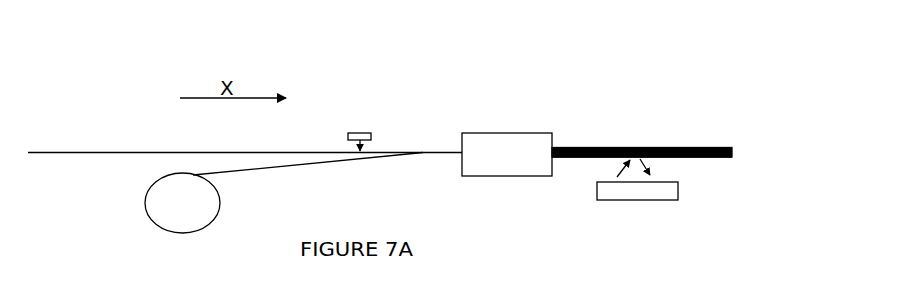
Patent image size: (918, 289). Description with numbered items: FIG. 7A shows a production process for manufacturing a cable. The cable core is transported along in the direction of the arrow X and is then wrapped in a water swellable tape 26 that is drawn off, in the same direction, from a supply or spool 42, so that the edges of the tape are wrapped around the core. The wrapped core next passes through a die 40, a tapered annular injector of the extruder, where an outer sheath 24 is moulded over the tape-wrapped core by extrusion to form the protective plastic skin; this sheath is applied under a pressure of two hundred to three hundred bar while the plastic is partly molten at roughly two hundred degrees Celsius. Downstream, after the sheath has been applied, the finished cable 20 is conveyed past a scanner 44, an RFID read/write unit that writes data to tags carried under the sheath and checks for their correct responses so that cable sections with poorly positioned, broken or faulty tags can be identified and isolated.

The substrate 20 is at (710, 157).
The outer sheath 24 is at (684, 147).
The water swellable tape 26 is at (293, 163).
The die 40 is at (521, 150).
The spool 42 is at (145, 209).
The scanner 44 is at (637, 192).